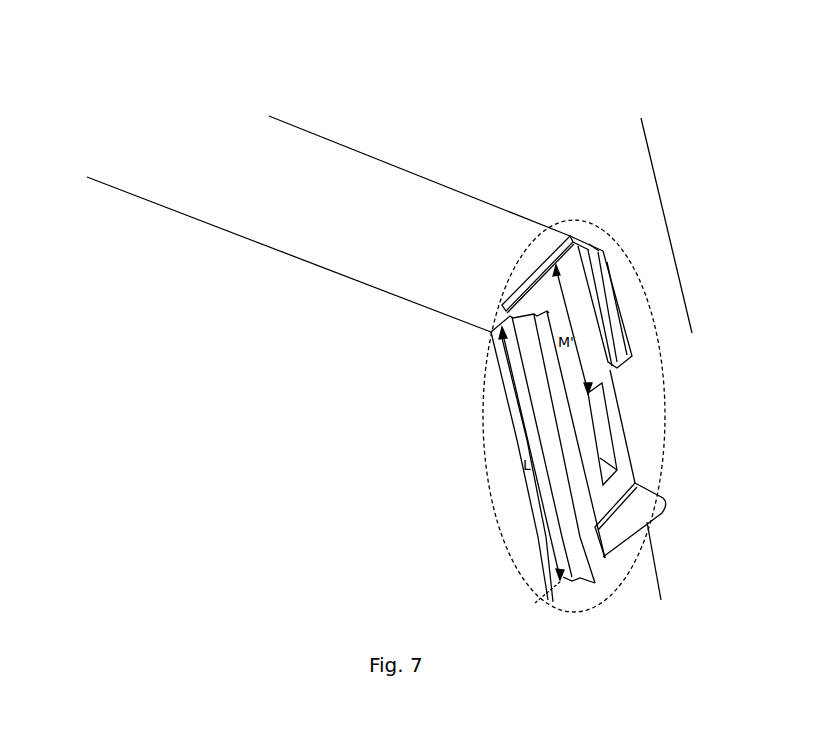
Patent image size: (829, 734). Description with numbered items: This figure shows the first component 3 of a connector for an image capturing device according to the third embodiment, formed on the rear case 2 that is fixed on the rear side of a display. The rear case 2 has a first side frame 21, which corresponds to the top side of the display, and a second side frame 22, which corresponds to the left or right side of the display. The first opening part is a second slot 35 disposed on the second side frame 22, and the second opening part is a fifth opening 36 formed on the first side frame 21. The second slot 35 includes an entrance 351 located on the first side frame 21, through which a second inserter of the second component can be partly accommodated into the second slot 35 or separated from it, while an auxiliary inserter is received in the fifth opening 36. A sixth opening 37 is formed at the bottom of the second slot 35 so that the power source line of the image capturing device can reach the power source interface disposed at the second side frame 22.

The rear case 2 is at (133, 303).
The first side frame 21 is at (335, 178).
The second side frame 22 is at (643, 582).
The first component 3 is at (481, 492).
The second slot 35 is at (575, 320).
The entrance 351 is at (507, 317).
The fifth opening 36 is at (544, 256).
The sixth opening 37 is at (607, 443).